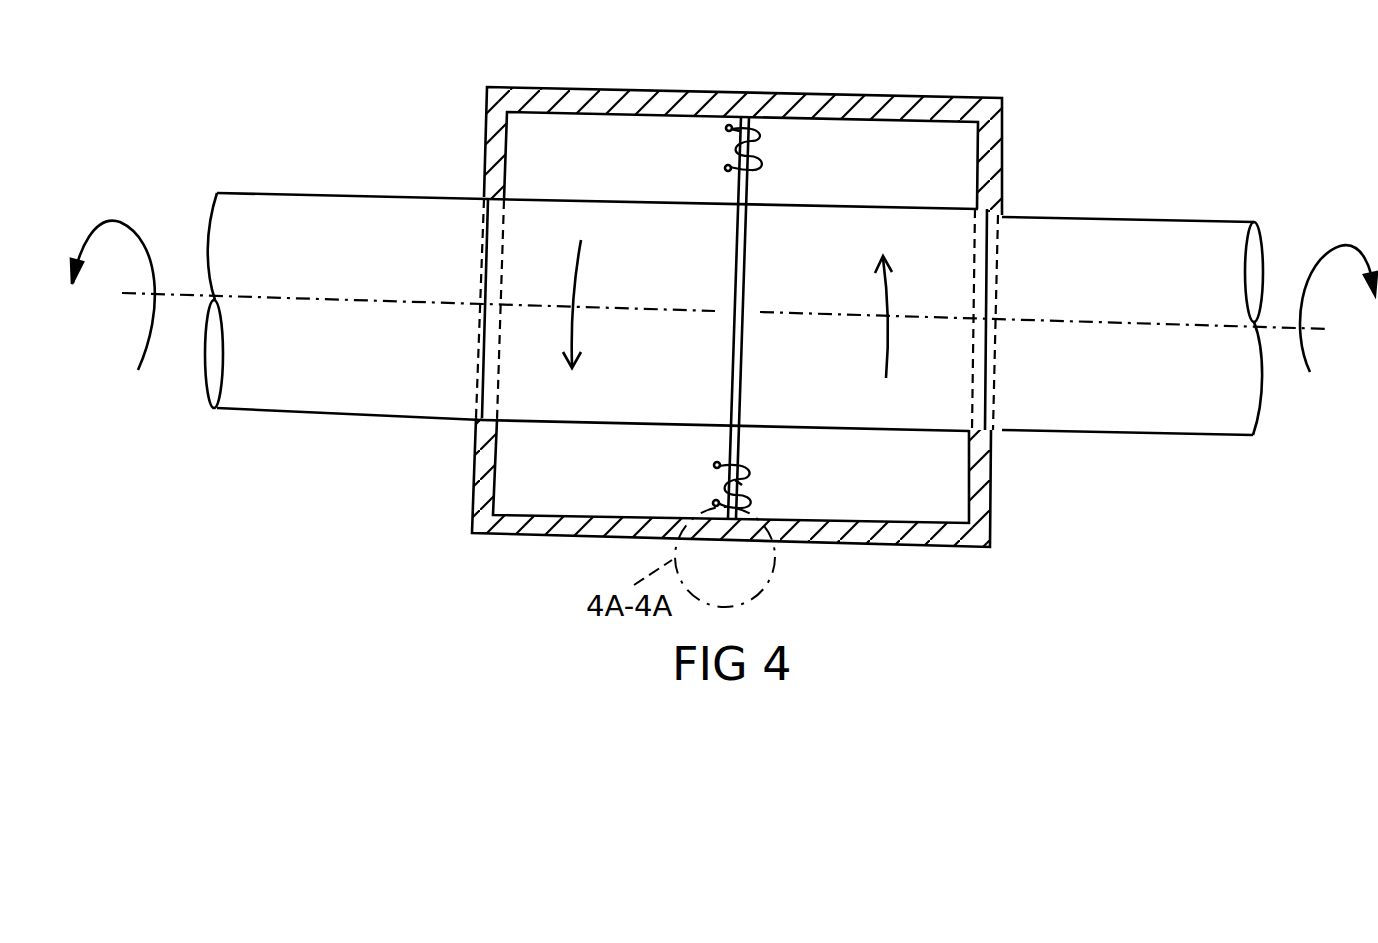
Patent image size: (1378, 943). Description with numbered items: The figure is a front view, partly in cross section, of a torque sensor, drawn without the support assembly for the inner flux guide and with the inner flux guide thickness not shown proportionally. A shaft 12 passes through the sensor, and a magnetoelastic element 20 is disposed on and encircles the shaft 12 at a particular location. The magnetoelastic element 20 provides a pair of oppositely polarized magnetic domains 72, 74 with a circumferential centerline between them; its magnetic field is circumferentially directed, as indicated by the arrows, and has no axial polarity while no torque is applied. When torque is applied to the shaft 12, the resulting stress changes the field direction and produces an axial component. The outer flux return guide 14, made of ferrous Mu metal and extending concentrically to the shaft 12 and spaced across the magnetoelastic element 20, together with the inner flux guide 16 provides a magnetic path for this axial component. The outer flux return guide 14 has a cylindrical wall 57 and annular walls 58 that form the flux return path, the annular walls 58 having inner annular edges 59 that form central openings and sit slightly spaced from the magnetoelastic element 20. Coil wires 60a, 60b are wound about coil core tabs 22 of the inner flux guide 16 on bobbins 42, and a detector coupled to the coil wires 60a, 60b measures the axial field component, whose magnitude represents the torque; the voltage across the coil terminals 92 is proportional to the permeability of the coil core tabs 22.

The shaft 12 is at (1140, 218).
The outer flux return guide 14 is at (845, 88).
The inner flux guide 16 is at (748, 238).
The magnetoelastic element 20 is at (482, 196).
The coil core tabs 22 is at (739, 134).
The bobbins 42 is at (727, 129).
The cylindrical wall 57 is at (651, 91).
The annular walls 58 is at (485, 99).
The inner annular edges 59 is at (1005, 207).
The coil wire 60a is at (745, 500).
The coil wire 60b is at (758, 135).
The magnetic domain 72 is at (660, 290).
The magnetic domain 74 is at (848, 292).
The coil terminals 92 is at (727, 169).